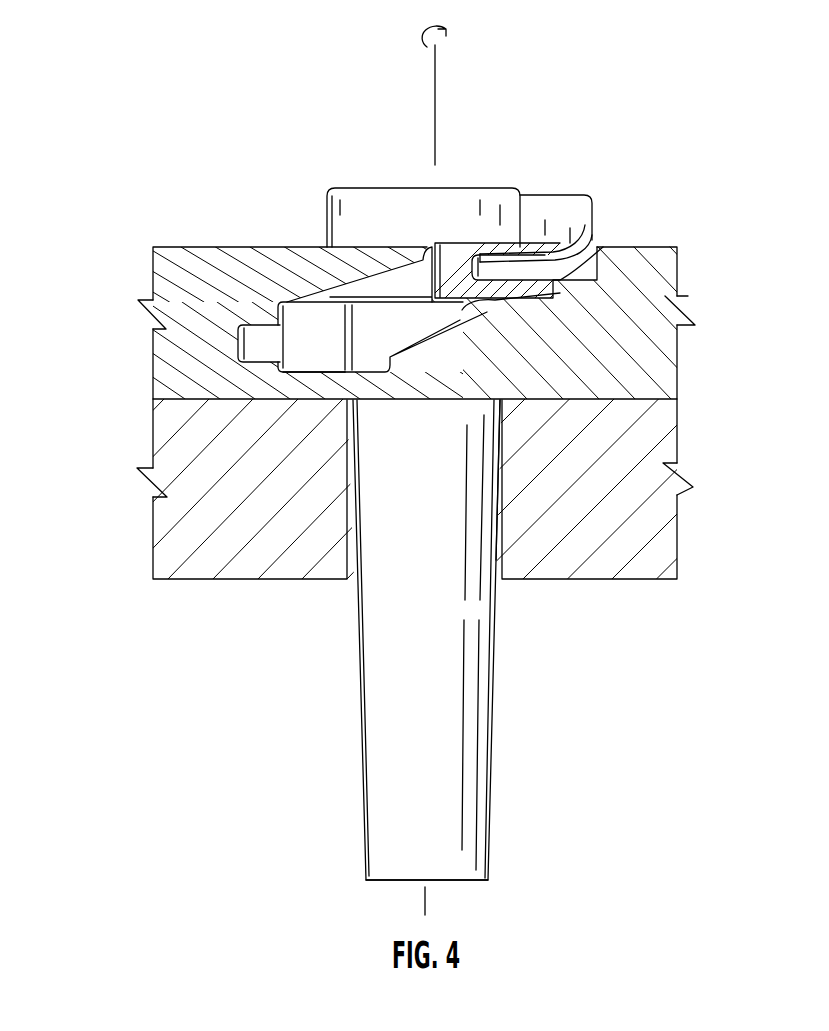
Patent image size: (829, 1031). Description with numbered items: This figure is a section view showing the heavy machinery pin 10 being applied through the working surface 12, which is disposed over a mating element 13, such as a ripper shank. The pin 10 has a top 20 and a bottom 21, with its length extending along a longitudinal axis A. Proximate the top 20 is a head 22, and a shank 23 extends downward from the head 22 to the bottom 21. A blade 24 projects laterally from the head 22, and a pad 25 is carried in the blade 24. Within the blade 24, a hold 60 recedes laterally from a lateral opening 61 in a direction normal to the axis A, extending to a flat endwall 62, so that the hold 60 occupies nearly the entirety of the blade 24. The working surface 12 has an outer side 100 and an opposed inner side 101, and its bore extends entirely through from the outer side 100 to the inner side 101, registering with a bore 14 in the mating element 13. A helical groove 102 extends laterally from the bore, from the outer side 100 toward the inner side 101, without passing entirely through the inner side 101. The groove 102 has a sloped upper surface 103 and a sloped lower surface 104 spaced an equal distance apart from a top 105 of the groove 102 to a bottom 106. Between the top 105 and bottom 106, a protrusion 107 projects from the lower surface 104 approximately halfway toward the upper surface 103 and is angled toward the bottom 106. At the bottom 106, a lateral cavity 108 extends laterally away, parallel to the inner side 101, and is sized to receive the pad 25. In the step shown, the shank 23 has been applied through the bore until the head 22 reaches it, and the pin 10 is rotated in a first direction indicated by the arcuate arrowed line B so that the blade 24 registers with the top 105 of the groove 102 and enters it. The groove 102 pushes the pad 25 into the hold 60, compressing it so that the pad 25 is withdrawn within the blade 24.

The heavy machinery pin 10 is at (461, 499).
The working surface 12 is at (407, 304).
The mating element 13 is at (414, 519).
The bore in the mating element 14 is at (510, 588).
The top 20 is at (461, 495).
The bottom 21 is at (478, 882).
The head 22 is at (328, 222).
The shank 23 is at (490, 697).
The blade 24 is at (592, 200).
The pad 25 is at (593, 267).
The hold 60 is at (531, 244).
The lateral opening 61 is at (590, 247).
The endwall 62 is at (482, 266).
The outer side 100 is at (670, 245).
The inner side 101 is at (660, 399).
The helical groove 102 is at (409, 284).
The upper surface 103 is at (307, 307).
The lower surface 104 is at (373, 343).
The top of the groove 105 is at (567, 257).
The bottom of the groove 106 is at (280, 317).
The protrusion 107 is at (462, 310).
The lateral cavity 108 is at (297, 374).
The longitudinal axis A is at (437, 92).
The first direction B is at (455, 40).